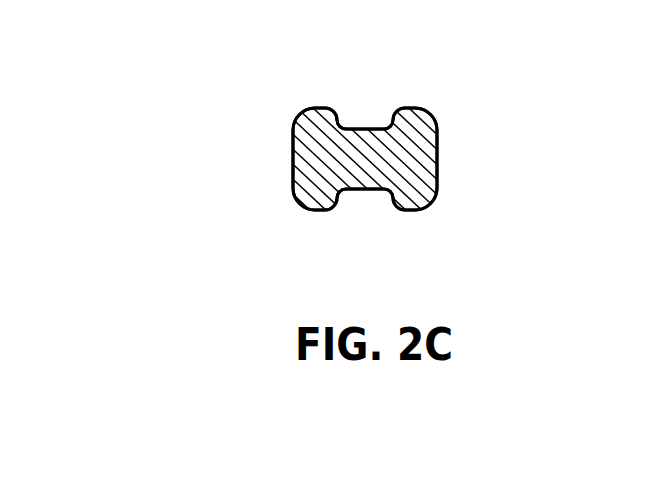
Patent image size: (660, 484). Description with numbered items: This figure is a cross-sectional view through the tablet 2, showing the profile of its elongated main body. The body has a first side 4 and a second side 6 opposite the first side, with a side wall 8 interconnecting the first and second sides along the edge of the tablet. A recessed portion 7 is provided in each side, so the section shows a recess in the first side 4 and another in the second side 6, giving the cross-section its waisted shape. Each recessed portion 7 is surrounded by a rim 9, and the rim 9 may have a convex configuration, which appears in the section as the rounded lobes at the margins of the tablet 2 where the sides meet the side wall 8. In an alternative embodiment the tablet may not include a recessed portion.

The tablet 2 is at (289, 116).
The first side 4 is at (421, 110).
The second side 6 is at (424, 203).
The recessed portion 7 is at (358, 124).
The side wall 8 is at (437, 150).
The rim 9 is at (324, 128).